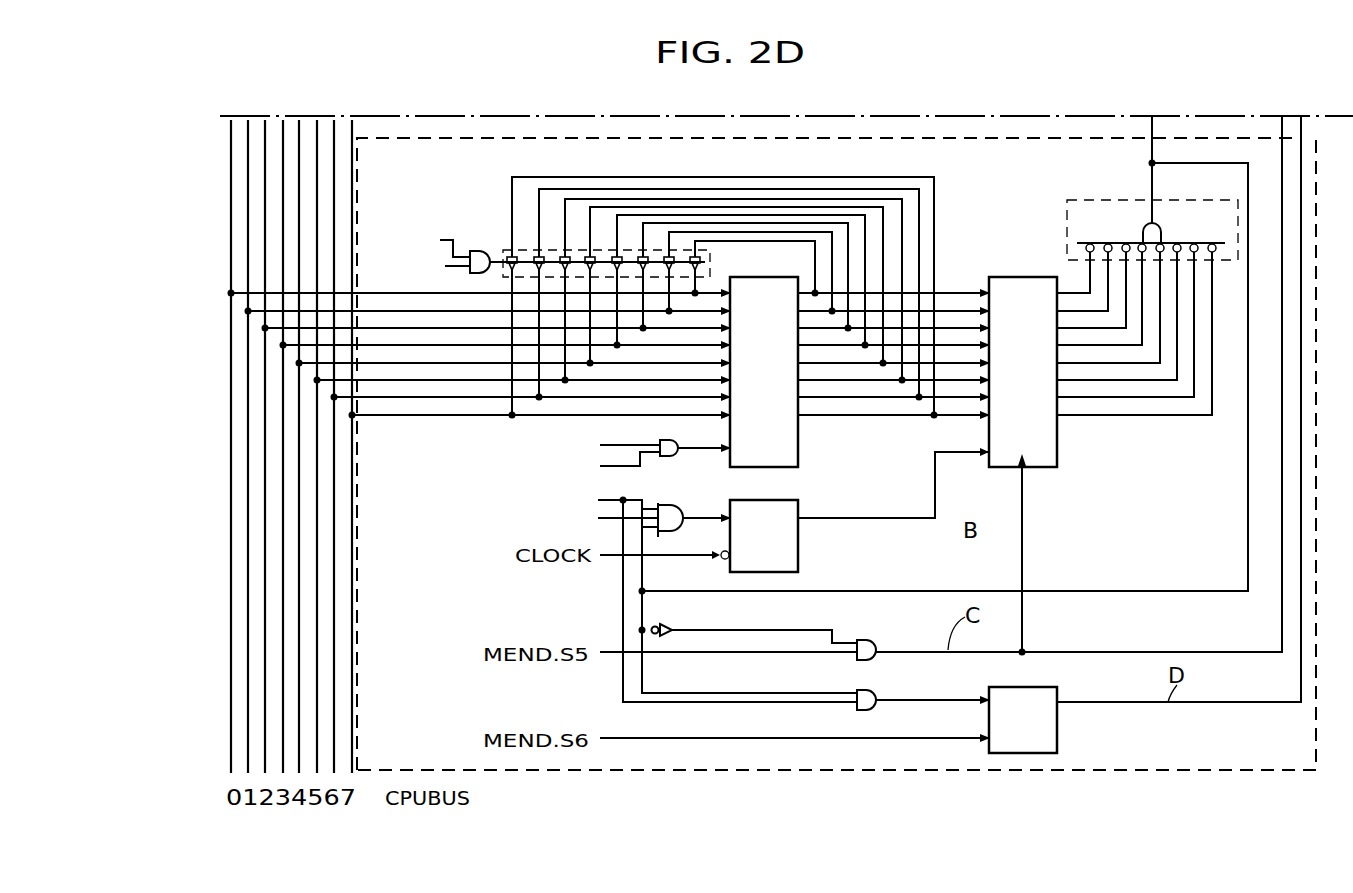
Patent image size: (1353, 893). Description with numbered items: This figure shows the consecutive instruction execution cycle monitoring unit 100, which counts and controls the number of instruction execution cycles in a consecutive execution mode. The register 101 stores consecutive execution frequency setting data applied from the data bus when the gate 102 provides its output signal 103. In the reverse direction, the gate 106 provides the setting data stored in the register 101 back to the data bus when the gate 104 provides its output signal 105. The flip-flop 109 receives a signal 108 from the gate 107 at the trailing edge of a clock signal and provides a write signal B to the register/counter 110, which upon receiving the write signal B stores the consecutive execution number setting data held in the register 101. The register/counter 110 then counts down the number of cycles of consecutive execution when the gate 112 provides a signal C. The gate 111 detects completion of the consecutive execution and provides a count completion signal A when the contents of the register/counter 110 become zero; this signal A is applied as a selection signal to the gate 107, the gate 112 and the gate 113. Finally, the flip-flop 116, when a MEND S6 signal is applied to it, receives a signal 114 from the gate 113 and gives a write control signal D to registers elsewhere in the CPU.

The consecutive instruction execution cycle monitoring unit 100 is at (448, 138).
The register 101 is at (800, 440).
The gate 102 is at (662, 441).
The output signal 103 is at (706, 452).
The gate 104 is at (476, 251).
The output signal 105 is at (498, 261).
The gate 106 is at (510, 256).
The gate 107 is at (660, 505).
The signal 108 is at (697, 513).
The flip-flop 109 is at (800, 556).
The register/counter 110 is at (1060, 463).
The gate 111 is at (1067, 228).
The gate 112 is at (868, 640).
The gate 113 is at (872, 695).
The signal 114 is at (938, 700).
The flip-flop 116 is at (1058, 727).